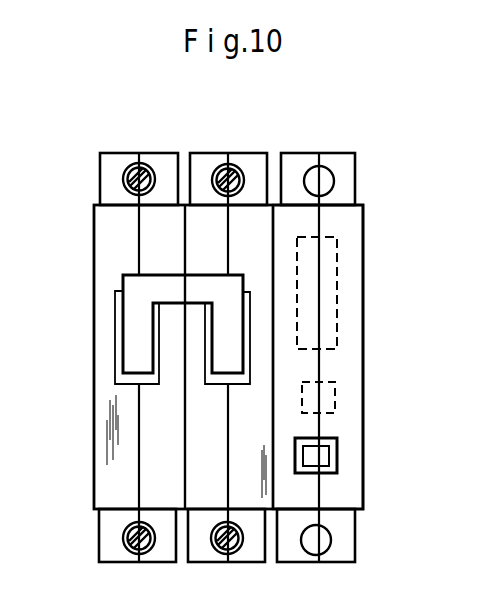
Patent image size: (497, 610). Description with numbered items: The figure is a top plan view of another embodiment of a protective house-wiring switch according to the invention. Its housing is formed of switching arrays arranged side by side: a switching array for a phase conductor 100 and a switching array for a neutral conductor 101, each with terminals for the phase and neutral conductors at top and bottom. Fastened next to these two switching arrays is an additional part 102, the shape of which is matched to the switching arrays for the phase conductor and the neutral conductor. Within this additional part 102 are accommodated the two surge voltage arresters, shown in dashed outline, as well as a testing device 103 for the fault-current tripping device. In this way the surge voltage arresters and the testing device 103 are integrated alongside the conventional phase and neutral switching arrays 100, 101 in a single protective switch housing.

The switching array for the phase conductor 100 is at (103, 326).
The switching array for the neutral conductor 101 is at (203, 429).
The testing device 103 is at (320, 457).
The additional part 102 is at (340, 495).